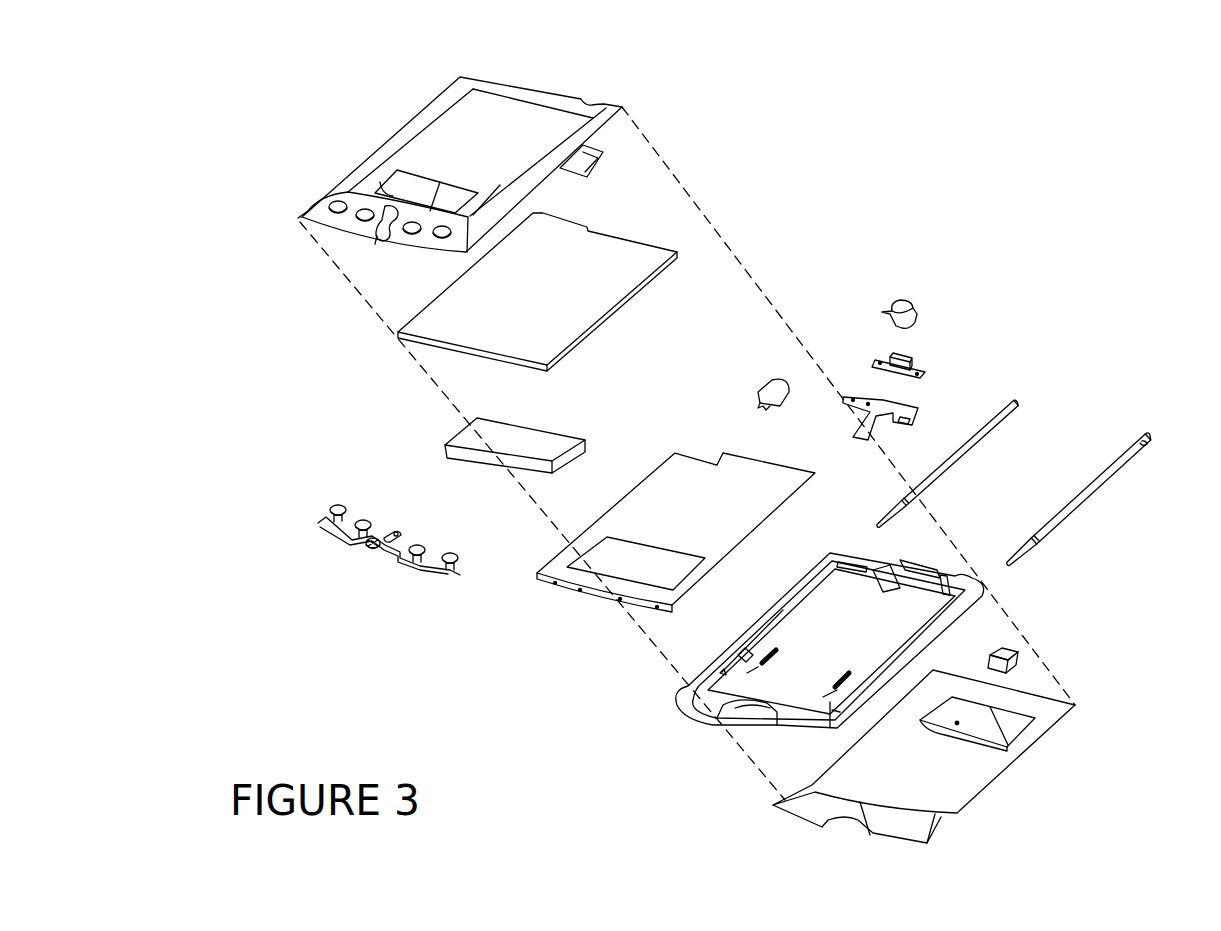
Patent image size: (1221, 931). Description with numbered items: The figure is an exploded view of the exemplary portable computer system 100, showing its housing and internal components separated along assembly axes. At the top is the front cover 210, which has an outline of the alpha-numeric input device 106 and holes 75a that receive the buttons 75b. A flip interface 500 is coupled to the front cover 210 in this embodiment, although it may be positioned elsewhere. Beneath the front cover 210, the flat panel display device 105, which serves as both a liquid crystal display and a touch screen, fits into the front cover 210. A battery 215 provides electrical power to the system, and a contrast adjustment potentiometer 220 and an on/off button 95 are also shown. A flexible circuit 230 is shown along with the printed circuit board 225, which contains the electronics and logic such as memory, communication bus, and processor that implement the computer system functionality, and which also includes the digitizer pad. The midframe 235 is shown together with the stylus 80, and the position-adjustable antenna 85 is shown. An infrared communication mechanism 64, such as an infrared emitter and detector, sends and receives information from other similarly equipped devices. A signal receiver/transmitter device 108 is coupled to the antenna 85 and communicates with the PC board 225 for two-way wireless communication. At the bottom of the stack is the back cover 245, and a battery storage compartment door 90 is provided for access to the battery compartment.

The portable computer system 100 is at (182, 75).
The front cover 210 is at (628, 103).
The alpha-numeric input device 106 is at (397, 186).
The holes 75a is at (299, 219).
The flip interface 500 is at (606, 166).
The flat panel display device 105 is at (656, 240).
The battery 215 is at (450, 432).
The buttons 75b is at (326, 504).
The printed circuit (PC) board 225 is at (546, 547).
The contrast adjustment (potentiometer) 220 is at (766, 383).
The on/off button 95 is at (903, 296).
The infrared communication mechanism 64 is at (930, 361).
The flexible circuit 230 is at (925, 405).
The antenna 85 is at (1023, 395).
The stylus 80 is at (1124, 479).
The midframe 235 is at (976, 618).
The receiver/transmitter device 108 is at (1032, 660).
The battery storage compartment door 90 is at (1005, 720).
The back cover 245 is at (993, 800).